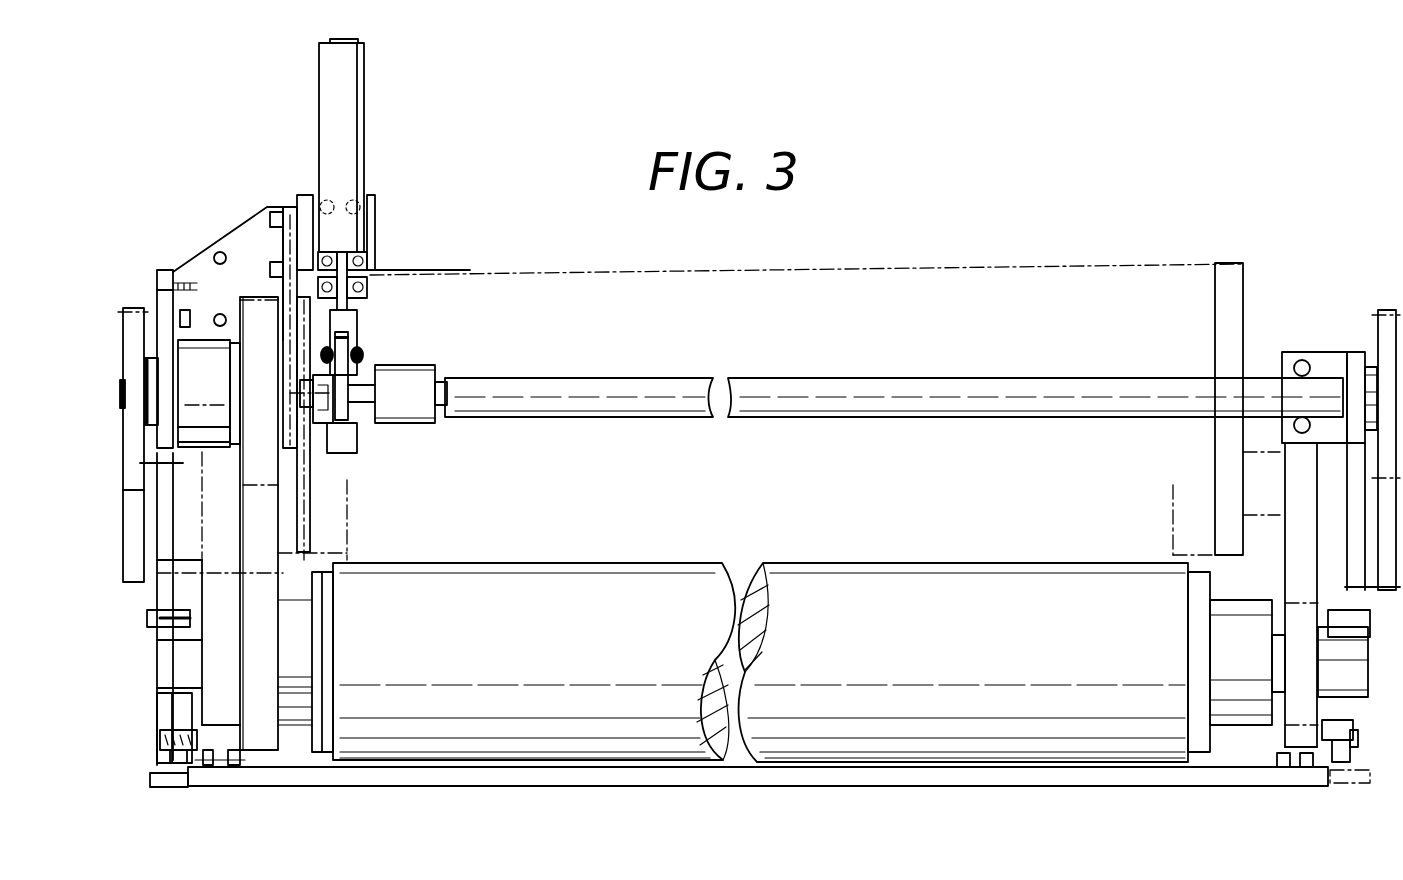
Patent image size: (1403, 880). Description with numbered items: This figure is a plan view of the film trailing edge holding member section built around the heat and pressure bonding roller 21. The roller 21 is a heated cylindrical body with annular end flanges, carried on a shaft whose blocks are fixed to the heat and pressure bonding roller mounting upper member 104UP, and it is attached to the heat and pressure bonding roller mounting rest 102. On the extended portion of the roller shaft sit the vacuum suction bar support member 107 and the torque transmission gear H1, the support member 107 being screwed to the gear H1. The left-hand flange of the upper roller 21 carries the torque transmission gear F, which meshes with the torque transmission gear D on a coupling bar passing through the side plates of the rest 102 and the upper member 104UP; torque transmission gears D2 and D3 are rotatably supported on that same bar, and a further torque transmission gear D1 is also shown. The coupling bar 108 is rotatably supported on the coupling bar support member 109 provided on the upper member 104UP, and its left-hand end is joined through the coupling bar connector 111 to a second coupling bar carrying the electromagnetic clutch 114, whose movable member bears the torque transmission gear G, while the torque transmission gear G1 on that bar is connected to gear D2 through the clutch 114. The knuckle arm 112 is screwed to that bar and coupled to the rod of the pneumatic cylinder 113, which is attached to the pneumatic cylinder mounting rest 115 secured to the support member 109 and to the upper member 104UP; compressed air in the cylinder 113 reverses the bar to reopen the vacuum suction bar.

The heat and pressure bonding roller 21 is at (478, 745).
The heat and pressure bonding roller mounting rest 102 is at (266, 207).
The heat and pressure bonding roller mounting upper member 104UP is at (222, 712).
The vacuum suction bar support member 107 is at (178, 708).
The coupling bar 108 is at (612, 378).
The coupling bar support member 109 is at (172, 270).
The coupling bar connector 111 is at (425, 368).
The knuckle arm 112 is at (355, 350).
The pneumatic cylinder 113 is at (353, 158).
The electromagnetic clutch 114 is at (207, 348).
The pneumatic cylinder mounting rest 115 is at (296, 218).
The torque transmission gear G is at (150, 362).
The torque transmission gear G1 is at (128, 325).
The torque transmission gear D is at (267, 514).
The drive member D1 is at (183, 463).
The torque transmission gear D2 is at (163, 556).
The torque transmission gear D3 is at (130, 522).
The torque transmission gear H1 is at (162, 597).
The torque transmission gear F is at (268, 740).